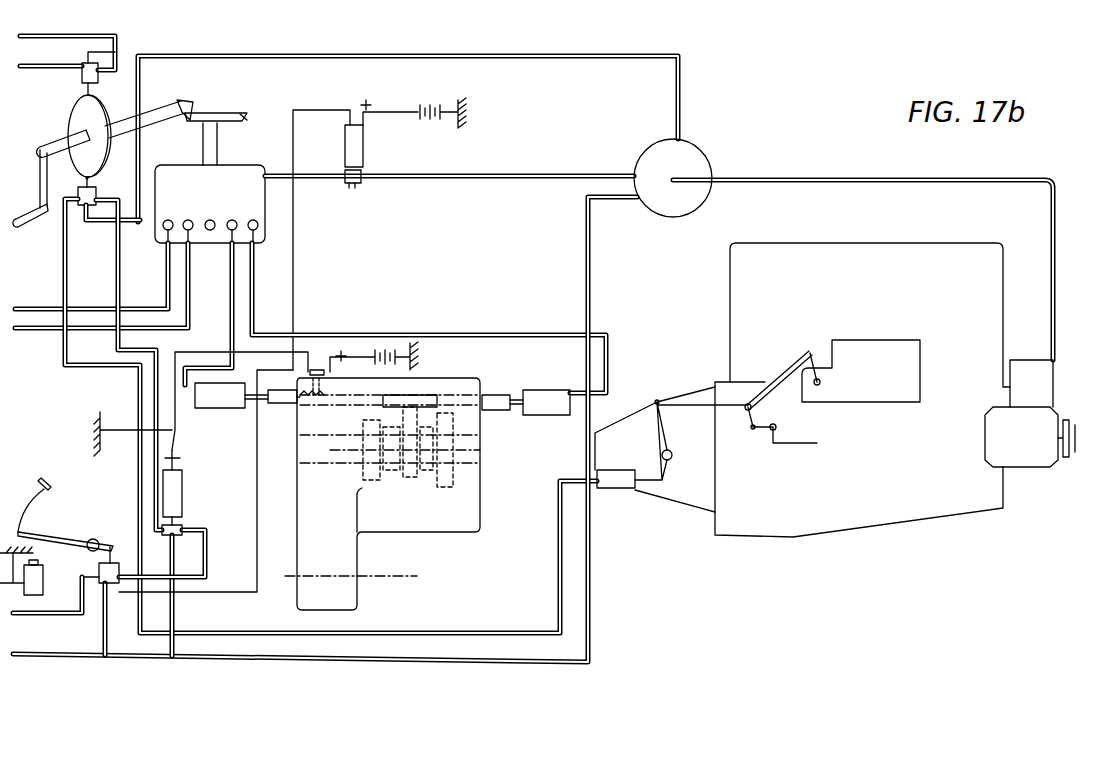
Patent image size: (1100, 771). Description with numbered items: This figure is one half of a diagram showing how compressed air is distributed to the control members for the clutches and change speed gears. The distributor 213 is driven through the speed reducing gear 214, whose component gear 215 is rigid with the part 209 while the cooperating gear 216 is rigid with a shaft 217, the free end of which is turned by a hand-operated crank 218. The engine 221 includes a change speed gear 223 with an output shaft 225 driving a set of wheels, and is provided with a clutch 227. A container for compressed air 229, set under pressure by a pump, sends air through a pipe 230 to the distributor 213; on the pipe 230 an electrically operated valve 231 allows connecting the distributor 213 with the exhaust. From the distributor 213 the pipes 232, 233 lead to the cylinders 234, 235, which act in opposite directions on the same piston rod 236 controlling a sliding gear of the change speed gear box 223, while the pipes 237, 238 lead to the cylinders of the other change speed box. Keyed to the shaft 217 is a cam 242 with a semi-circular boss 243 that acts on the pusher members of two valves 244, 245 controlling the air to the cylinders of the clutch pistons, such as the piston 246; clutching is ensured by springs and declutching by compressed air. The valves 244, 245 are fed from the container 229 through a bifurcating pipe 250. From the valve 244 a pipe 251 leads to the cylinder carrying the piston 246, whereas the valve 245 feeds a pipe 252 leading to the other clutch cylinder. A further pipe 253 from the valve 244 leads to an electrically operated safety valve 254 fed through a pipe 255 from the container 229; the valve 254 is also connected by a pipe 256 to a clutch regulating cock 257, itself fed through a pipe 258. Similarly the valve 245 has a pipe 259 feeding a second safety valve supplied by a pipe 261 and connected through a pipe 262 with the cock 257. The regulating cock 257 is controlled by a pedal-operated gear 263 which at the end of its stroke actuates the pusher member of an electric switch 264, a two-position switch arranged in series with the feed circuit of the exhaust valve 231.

The part 209 is at (218, 151).
The distributor 213 is at (174, 176).
The speed reducing gear 214 is at (200, 116).
The component gear 215 is at (240, 117).
The cooperating gear 216 is at (186, 100).
The shaft 217 is at (135, 118).
The hand-operated crank 218 is at (40, 190).
The engine 221 is at (943, 503).
The change speed gear 223 is at (468, 518).
The output shaft 225 is at (388, 578).
The clutch 227 is at (708, 496).
The container for compressed air 229 is at (690, 155).
The pipe 230 is at (440, 179).
The electrically operated valve 231 is at (358, 148).
The pipe 232 is at (255, 320).
The pipe 233 is at (232, 330).
The cylinder 234 is at (568, 415).
The cylinder 235 is at (219, 400).
The piston rod 236 is at (257, 400).
The pipe 237 is at (52, 308).
The pipe 238 is at (52, 330).
The cam 242 is at (74, 128).
The semi-circular boss 243 is at (96, 183).
The valve 244 is at (78, 200).
The valve 245 is at (83, 67).
The piston 246 is at (630, 489).
The pipe 250 is at (503, 58).
The pipe 251 is at (292, 632).
The pipe 252 is at (120, 40).
The pipe 253 is at (121, 265).
The safety valve 254 is at (183, 530).
The pipe 255 is at (174, 607).
The pipe 256 is at (205, 560).
The clutch regulating cock 257 is at (98, 568).
The pipe 258 is at (103, 640).
The pipe 259 is at (55, 69).
The pipe 261 is at (55, 656).
The pipe 262 is at (47, 612).
The pedal-operated gear 263 is at (60, 540).
The electric switch 264 is at (38, 586).